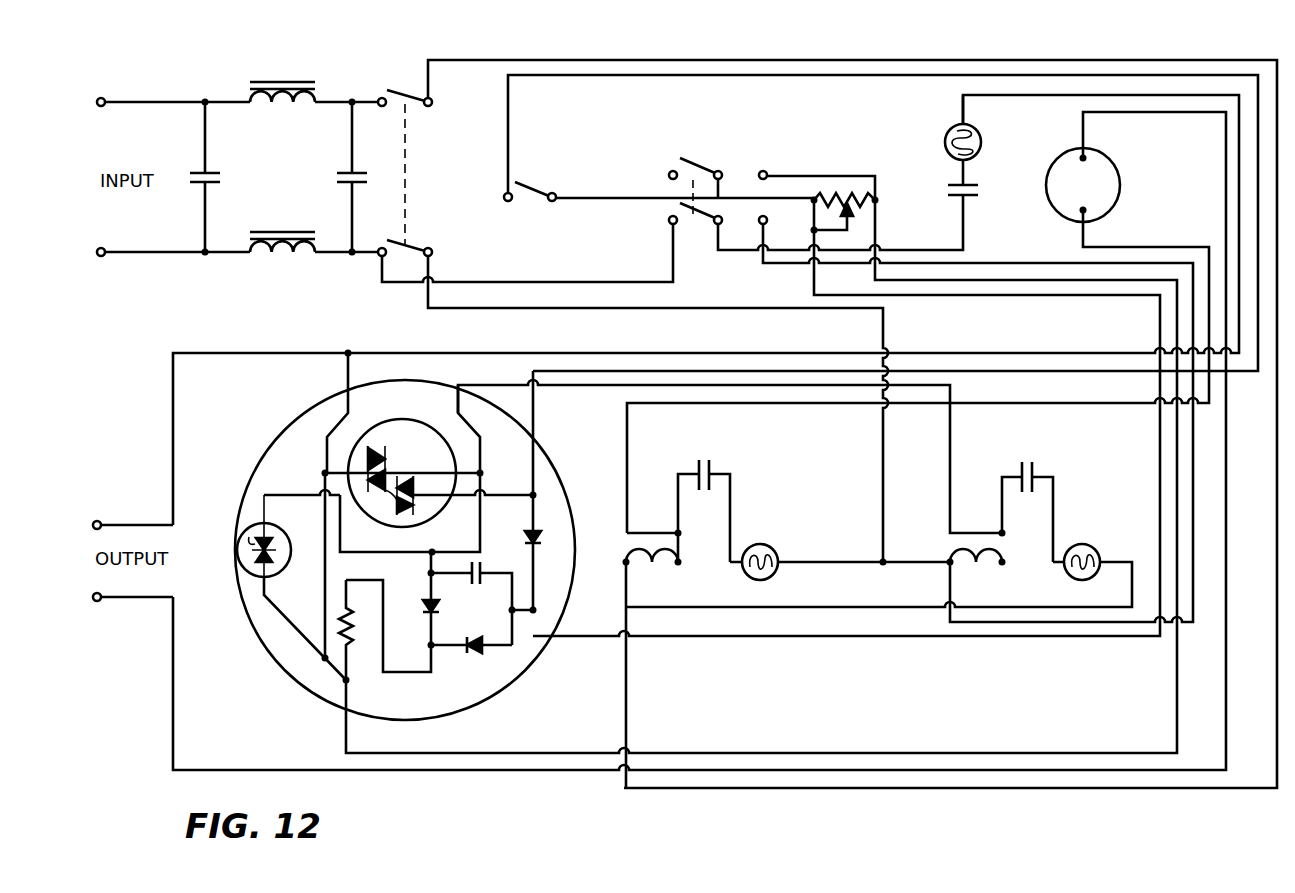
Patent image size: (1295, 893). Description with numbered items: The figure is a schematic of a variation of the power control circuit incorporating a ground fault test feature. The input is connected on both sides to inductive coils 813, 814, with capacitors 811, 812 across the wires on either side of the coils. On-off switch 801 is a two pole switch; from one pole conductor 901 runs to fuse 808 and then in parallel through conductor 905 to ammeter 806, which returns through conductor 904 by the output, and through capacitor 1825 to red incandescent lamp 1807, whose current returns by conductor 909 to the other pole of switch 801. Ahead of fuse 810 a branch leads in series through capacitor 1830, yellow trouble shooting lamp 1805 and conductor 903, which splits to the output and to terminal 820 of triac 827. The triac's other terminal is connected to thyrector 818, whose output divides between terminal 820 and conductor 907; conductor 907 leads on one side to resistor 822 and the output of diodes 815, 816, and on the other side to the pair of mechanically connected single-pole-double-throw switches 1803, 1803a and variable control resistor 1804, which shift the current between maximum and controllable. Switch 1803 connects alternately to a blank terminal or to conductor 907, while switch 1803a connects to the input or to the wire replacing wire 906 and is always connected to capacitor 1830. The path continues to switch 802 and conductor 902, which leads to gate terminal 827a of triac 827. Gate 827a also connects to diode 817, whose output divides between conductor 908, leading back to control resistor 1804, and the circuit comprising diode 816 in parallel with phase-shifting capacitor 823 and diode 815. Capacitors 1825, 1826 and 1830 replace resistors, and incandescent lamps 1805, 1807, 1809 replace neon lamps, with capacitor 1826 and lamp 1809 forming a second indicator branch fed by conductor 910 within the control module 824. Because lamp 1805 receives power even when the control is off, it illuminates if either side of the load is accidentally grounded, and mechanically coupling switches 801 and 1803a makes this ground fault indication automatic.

The on-off switch 801 is at (413, 242).
The switch 802 is at (537, 190).
The ammeter 806 is at (1054, 212).
The fuse 808 is at (650, 568).
The fuse 810 is at (973, 569).
The capacitor 811 is at (220, 184).
The capacitor 812 is at (336, 178).
The inductive coil 813 is at (308, 82).
The inductive coil 814 is at (258, 232).
The diode 815 is at (424, 603).
The diode 816 is at (478, 650).
The diode 817 is at (540, 540).
The thyrector 818 is at (250, 573).
The terminal 820 is at (322, 474).
The resistor 822 is at (350, 645).
The phase-shifting capacitor 823 is at (481, 578).
The control module 824 is at (538, 658).
The triac 827 is at (427, 423).
The gate terminal 827a is at (536, 493).
The conductor 901 is at (721, 60).
The conductor 902 is at (792, 75).
The conductor 903 is at (1239, 180).
The conductor 904 is at (1226, 135).
The conductor 905 is at (1212, 262).
The wire 906 is at (1107, 266).
The conductor 907 is at (1177, 298).
The conductor 908 is at (1160, 320).
The conductor 909 is at (700, 308).
The conductor 910 is at (737, 385).
The switch 1803 is at (701, 168).
The switch 1803a is at (693, 238).
The variable control resistor 1804 is at (840, 198).
The incandescent lamp 1805 is at (981, 142).
The incandescent lamp 1807 is at (776, 553).
The incandescent lamp 1809 is at (1114, 535).
The capacitor 1825 is at (712, 468).
The capacitor 1826 is at (1036, 470).
The capacitor 1830 is at (978, 198).